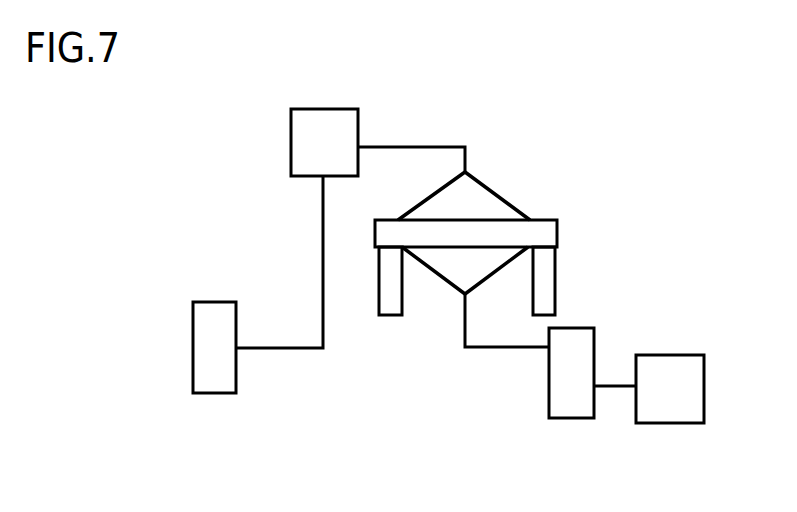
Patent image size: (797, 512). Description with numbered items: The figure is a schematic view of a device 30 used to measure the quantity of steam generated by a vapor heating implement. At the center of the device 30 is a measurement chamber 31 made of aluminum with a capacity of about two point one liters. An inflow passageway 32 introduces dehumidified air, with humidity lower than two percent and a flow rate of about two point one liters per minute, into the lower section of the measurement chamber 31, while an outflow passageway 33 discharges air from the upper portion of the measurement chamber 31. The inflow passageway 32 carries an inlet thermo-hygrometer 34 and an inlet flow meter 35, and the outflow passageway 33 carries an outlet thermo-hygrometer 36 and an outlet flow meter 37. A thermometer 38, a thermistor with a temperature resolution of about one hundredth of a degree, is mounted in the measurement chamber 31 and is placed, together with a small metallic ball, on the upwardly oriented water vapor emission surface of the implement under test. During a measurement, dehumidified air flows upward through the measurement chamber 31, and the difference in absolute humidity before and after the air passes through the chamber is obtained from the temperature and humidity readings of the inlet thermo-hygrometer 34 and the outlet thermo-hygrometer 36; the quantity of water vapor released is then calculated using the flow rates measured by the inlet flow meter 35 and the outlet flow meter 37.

The device 30 is at (588, 162).
The measurement chamber 31 is at (560, 233).
The inflow passageway 32 is at (498, 348).
The outflow passageway 33 is at (408, 147).
The inlet thermo-hygrometer 34 is at (690, 355).
The inlet flow meter 35 is at (596, 343).
The outlet thermo-hygrometer 36 is at (289, 156).
The outlet flow meter 37 is at (193, 312).
The thermometer 38 is at (487, 183).